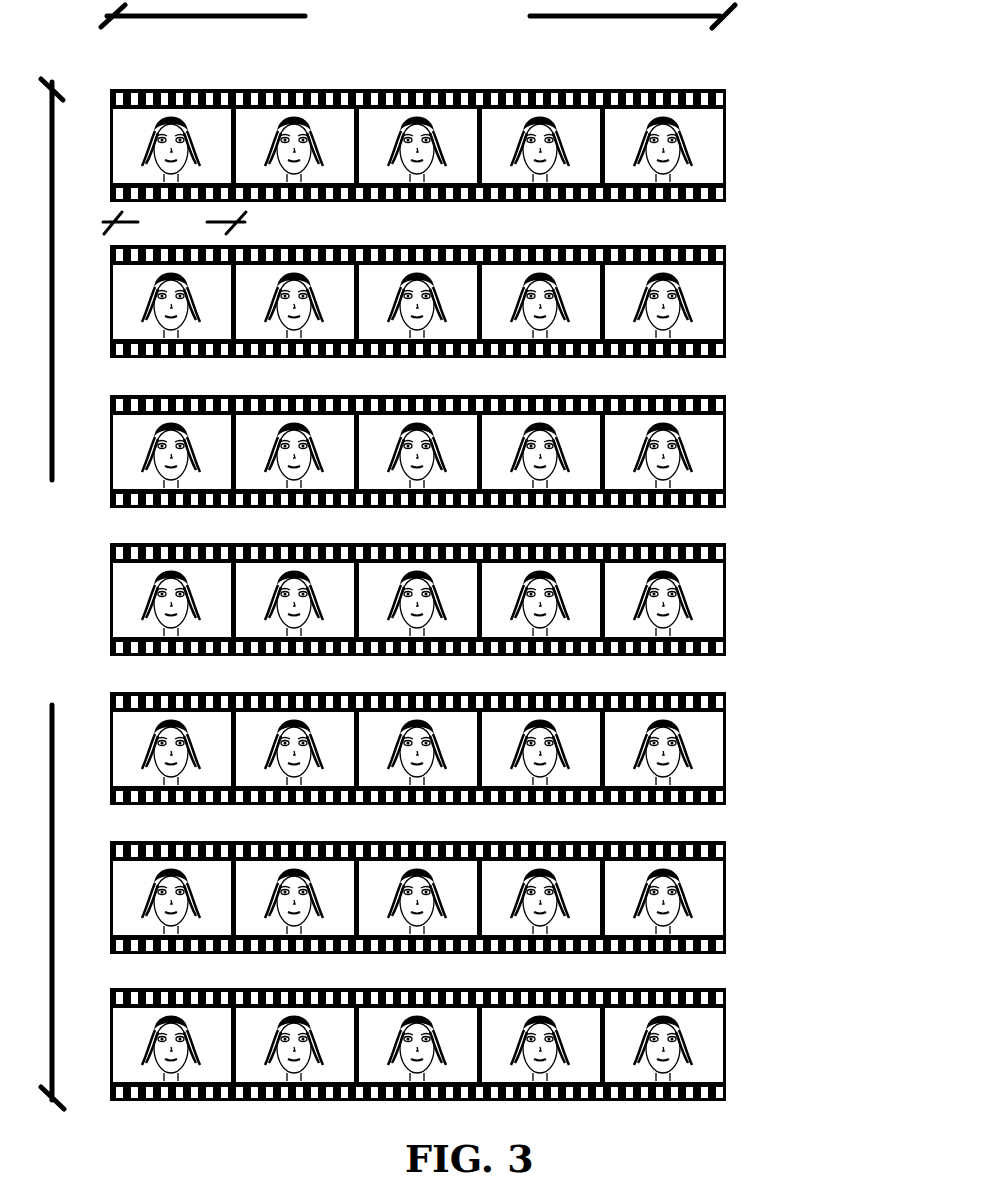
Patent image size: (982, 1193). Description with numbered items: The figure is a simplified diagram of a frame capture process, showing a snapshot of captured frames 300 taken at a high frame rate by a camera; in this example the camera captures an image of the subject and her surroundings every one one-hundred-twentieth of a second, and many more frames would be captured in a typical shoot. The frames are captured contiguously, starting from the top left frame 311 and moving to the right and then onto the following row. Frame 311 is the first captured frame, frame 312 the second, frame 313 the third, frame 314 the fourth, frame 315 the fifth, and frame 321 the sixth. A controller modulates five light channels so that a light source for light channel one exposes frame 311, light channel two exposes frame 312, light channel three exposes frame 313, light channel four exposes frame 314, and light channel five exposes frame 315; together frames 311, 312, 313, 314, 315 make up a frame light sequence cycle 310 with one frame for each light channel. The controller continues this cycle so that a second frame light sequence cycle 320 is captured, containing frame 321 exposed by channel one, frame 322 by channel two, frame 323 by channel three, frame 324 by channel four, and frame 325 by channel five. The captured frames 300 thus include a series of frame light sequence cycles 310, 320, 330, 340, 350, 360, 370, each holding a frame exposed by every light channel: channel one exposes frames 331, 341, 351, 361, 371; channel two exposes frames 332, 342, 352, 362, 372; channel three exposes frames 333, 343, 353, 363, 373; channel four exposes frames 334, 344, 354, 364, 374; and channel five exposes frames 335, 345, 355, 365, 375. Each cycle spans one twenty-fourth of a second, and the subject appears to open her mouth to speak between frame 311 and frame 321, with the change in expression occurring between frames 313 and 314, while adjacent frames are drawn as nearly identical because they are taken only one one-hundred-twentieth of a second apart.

The captured frames 300 is at (867, 47).
The frame light sequence cycle 310 is at (460, 145).
The frame 311 is at (172, 145).
The frame 312 is at (295, 145).
The frame 313 is at (418, 145).
The frame 314 is at (541, 145).
The frame 315 is at (664, 145).
The second frame light sequence cycle 320 is at (460, 301).
The frame 321 is at (172, 301).
The frame 322 is at (295, 301).
The frame 323 is at (418, 301).
The frame 324 is at (541, 301).
The frame 325 is at (664, 301).
The frame light sequence cycle 330 is at (460, 451).
The frame 331 is at (172, 451).
The frame 332 is at (295, 451).
The frame 333 is at (418, 451).
The frame 334 is at (541, 451).
The frame 335 is at (664, 451).
The frame light sequence cycle 340 is at (460, 599).
The frame 341 is at (172, 599).
The frame 342 is at (295, 599).
The frame 343 is at (418, 599).
The frame 344 is at (541, 599).
The frame 345 is at (664, 599).
The frame light sequence cycle 350 is at (460, 748).
The frame 351 is at (172, 748).
The frame 352 is at (295, 748).
The frame 353 is at (418, 748).
The frame 354 is at (541, 748).
The frame 355 is at (664, 748).
The frame light sequence cycle 360 is at (460, 897).
The frame 361 is at (172, 897).
The frame 362 is at (295, 897).
The frame 363 is at (418, 897).
The frame 364 is at (541, 897).
The frame 365 is at (664, 897).
The frame light sequence cycle 370 is at (460, 1044).
The frame 371 is at (172, 1044).
The frame 372 is at (295, 1044).
The frame 373 is at (418, 1044).
The frame 374 is at (541, 1044).
The frame 375 is at (664, 1044).